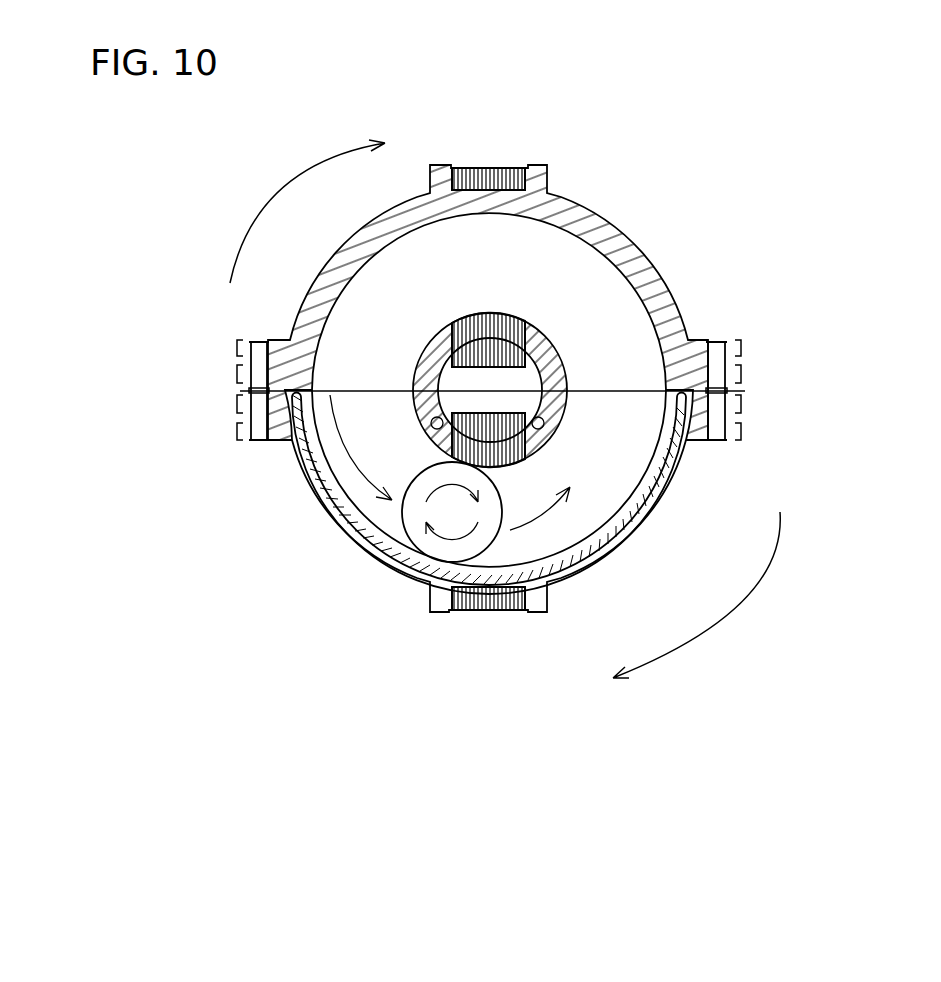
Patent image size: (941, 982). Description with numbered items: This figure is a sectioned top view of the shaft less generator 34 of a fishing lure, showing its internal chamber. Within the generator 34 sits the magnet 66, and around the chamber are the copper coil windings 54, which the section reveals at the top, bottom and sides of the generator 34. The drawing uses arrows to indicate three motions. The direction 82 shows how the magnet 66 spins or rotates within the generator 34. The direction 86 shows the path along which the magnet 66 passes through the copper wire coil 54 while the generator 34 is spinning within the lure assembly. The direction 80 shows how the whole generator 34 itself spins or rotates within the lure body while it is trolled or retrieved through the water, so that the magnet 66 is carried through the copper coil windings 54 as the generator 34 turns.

The shaft less generator 34 is at (703, 252).
The copper wire coil 54 is at (520, 404).
The magnet 66 is at (425, 545).
The direction 80 is at (283, 200).
The direction 82 is at (440, 538).
The direction 86 is at (352, 463).